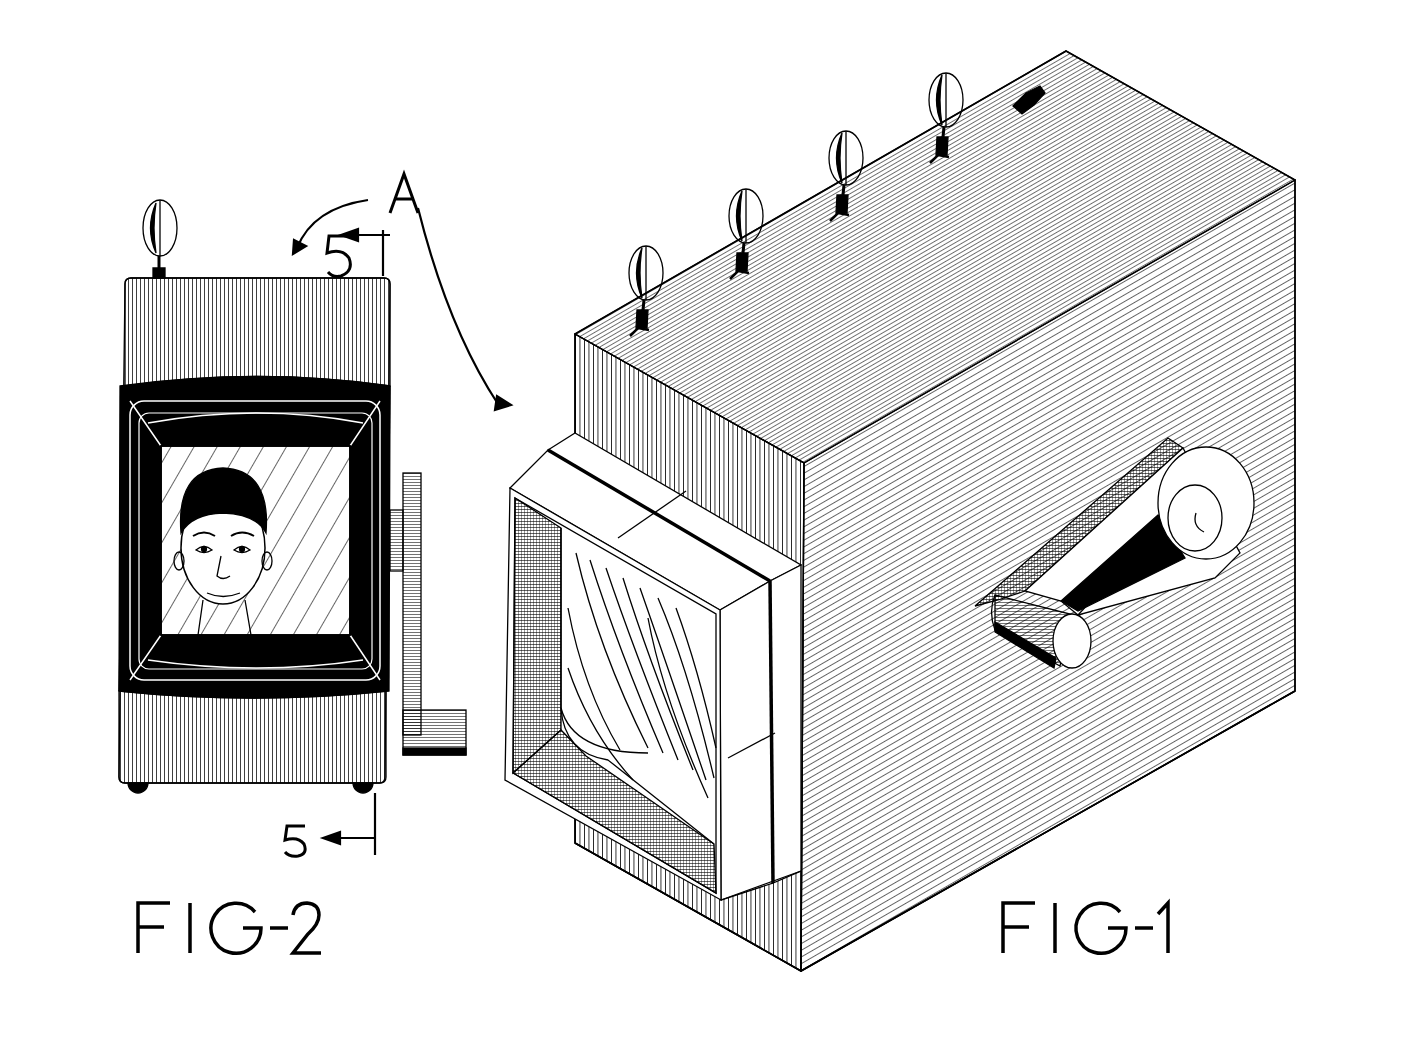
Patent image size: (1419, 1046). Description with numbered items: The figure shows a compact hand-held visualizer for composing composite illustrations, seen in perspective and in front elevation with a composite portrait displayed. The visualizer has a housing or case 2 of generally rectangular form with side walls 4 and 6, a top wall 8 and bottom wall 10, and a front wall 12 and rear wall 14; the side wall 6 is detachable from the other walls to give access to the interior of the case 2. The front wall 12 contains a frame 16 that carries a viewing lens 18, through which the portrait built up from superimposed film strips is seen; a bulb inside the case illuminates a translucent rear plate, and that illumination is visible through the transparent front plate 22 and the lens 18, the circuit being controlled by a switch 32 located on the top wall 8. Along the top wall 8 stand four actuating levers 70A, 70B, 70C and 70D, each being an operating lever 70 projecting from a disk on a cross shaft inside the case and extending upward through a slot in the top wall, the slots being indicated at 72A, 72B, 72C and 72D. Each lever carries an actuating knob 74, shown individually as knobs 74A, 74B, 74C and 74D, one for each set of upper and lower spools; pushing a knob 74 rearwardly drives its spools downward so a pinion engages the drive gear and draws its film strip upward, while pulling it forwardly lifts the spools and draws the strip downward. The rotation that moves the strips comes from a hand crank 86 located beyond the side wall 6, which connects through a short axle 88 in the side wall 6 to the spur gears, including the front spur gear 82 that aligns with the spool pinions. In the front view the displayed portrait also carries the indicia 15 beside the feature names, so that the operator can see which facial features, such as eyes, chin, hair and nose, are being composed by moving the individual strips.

In FIG. 1, the housing or case 2 is at (1078, 752).
In FIG. 1, the side wall 4 is at (562, 352).
In FIG. 2, the side wall 4 is at (117, 317).
In FIG. 1, the side wall 6 is at (1258, 636).
In FIG. 2, the side wall 6 is at (384, 368).
In FIG. 1, the top wall 8 is at (1225, 170).
In FIG. 2, the top wall 8 is at (224, 268).
In FIG. 1, the bottom wall 10 is at (1200, 733).
In FIG. 2, the bottom wall 10 is at (200, 777).
In FIG. 1, the front wall 12 is at (587, 397).
In FIG. 2, the front wall 12 is at (133, 752).
In FIG. 1, the rear wall 14 is at (1289, 465).
In FIG. 1, the frame 16 is at (497, 772).
In FIG. 2, the frame 16 is at (112, 645).
In FIG. 1, the viewing lens 18 is at (625, 758).
In FIG. 2, the viewing lens 18 is at (210, 540).
In FIG. 1, the switch 32 is at (1038, 86).
In FIG. 2, the operating lever 70 is at (146, 262).
In FIG. 1, the actuating lever 70A is at (647, 310).
In FIG. 1, the actuating lever 70B is at (747, 256).
In FIG. 1, the actuating lever 70C is at (847, 198).
In FIG. 1, the actuating lever 70D is at (948, 142).
In FIG. 1, the slot 72A is at (630, 326).
In FIG. 1, the slot 72B is at (735, 270).
In FIG. 1, the slot 72C is at (835, 212).
In FIG. 1, the slot 72D is at (935, 154).
In FIG. 2, the actuating knob 74 is at (148, 196).
In FIG. 1, the actuating knob 74A is at (637, 260).
In FIG. 1, the actuating knob 74B is at (737, 203).
In FIG. 1, the actuating knob 74C is at (837, 140).
In FIG. 1, the actuating knob 74D is at (937, 80).
In FIG. 1, the hand crank 86 is at (990, 596).
In FIG. 2, the hand crank 86 is at (414, 656).
In FIG. 1, the short axle 88 is at (1196, 524).
In FIG. 2, the short axle 88 is at (389, 502).
In FIG. 2, the eyes feature display 15 is at (303, 450).
In FIG. 2, the transparent front plate 22 is at (298, 508).
In FIG. 2, the front spur gear 82 is at (298, 538).